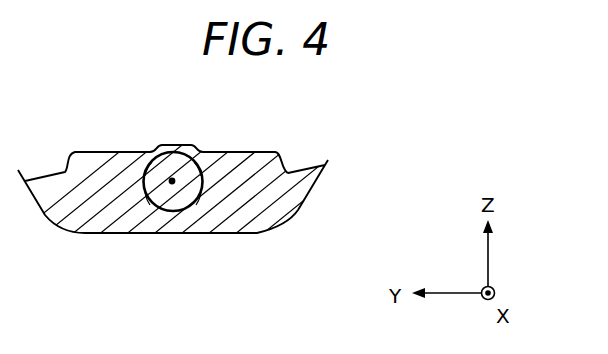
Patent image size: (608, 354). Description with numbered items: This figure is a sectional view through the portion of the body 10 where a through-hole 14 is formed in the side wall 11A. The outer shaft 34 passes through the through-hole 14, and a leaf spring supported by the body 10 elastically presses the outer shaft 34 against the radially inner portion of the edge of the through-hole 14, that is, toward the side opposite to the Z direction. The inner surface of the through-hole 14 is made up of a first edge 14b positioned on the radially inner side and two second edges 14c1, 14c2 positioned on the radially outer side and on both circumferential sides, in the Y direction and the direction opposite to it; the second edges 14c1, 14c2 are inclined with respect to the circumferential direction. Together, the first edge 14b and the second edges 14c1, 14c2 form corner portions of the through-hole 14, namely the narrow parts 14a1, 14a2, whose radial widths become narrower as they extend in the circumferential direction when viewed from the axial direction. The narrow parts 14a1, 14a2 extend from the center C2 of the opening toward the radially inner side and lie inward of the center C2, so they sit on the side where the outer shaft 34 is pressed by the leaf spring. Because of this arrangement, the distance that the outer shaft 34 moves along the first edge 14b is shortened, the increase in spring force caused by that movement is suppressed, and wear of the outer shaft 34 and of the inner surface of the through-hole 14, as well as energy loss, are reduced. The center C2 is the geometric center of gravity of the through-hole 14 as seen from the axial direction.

The body 10 is at (200, 177).
The side wall 11A is at (275, 152).
The through-hole 14 is at (184, 159).
The outer shaft 34 is at (160, 154).
The second edge 14c1 is at (144, 179).
The second edge 14c2 is at (201, 179).
The narrow part 14a1 is at (142, 202).
The narrow part 14a2 is at (203, 203).
The first edge 14b is at (166, 205).
The center C2 is at (172, 181).